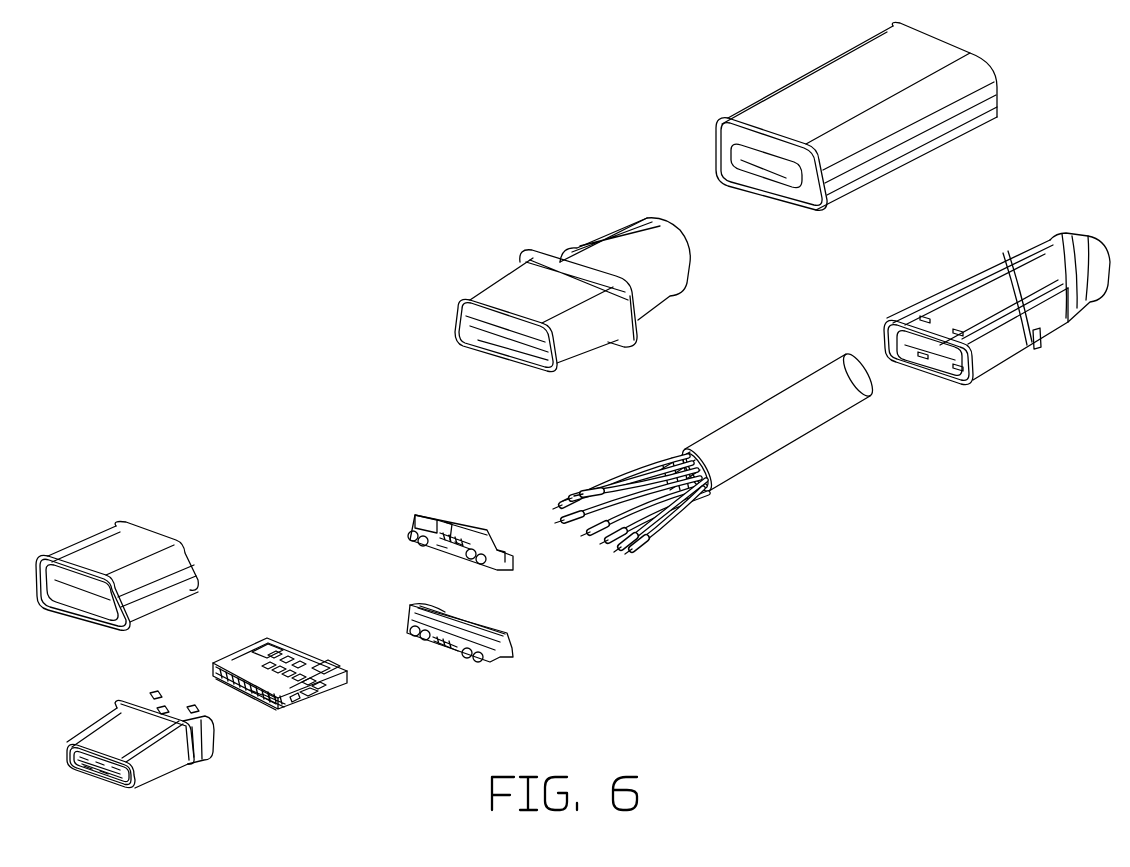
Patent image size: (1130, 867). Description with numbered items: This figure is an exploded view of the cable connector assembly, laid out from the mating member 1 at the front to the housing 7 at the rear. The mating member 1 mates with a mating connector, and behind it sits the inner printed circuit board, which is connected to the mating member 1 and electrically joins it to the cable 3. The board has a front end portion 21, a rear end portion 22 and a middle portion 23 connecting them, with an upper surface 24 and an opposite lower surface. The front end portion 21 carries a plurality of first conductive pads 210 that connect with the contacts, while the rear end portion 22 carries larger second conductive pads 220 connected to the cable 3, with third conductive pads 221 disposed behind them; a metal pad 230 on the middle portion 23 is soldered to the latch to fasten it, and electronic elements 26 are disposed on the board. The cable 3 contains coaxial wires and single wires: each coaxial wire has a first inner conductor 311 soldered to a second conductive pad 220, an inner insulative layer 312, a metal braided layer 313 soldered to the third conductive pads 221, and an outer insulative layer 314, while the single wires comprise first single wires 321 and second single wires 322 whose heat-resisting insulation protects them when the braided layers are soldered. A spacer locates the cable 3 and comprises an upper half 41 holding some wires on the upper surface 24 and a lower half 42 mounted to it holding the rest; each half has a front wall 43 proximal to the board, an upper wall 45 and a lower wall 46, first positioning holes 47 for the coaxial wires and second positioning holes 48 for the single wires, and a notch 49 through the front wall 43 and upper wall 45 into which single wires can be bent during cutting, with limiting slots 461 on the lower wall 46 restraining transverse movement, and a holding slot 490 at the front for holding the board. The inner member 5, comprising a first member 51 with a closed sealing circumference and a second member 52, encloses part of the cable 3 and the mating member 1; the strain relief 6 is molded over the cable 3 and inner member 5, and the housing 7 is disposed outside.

The mating member 1 is at (105, 732).
The cable 3 is at (777, 412).
The inner member 5 is at (970, 301).
The strain relief 6 is at (533, 288).
The housing 7 is at (807, 103).
The front end portion 21 is at (273, 697).
The rear end portion 22 is at (287, 673).
The middle portion 23 is at (310, 693).
The upper surface 24 is at (293, 657).
The electronic elements 26 is at (243, 673).
The upper half 41 is at (426, 527).
The lower half 42 is at (500, 645).
The front wall 43 is at (410, 537).
The upper wall 45 is at (468, 527).
The lower wall 46 is at (477, 627).
The first positioning holes 47 is at (420, 545).
The second positioning holes 48 is at (457, 550).
The notch 49 is at (448, 517).
The first member 51 is at (913, 317).
The second member 52 is at (983, 280).
The first conductive pads 210 is at (252, 693).
The second conductive pads 220 is at (252, 657).
The third conductive pads 221 is at (323, 663).
The metal pad 230 is at (293, 697).
The first inner conductor 311 is at (563, 498).
The inner insulative layer 312 is at (578, 497).
The metal braided layer 313 is at (590, 483).
The outer insulative layer 314 is at (618, 473).
The first single wires 321 is at (610, 540).
The second single wires 322 is at (568, 522).
The limiting slots 461 is at (437, 550).
The holding slot 490 is at (500, 655).